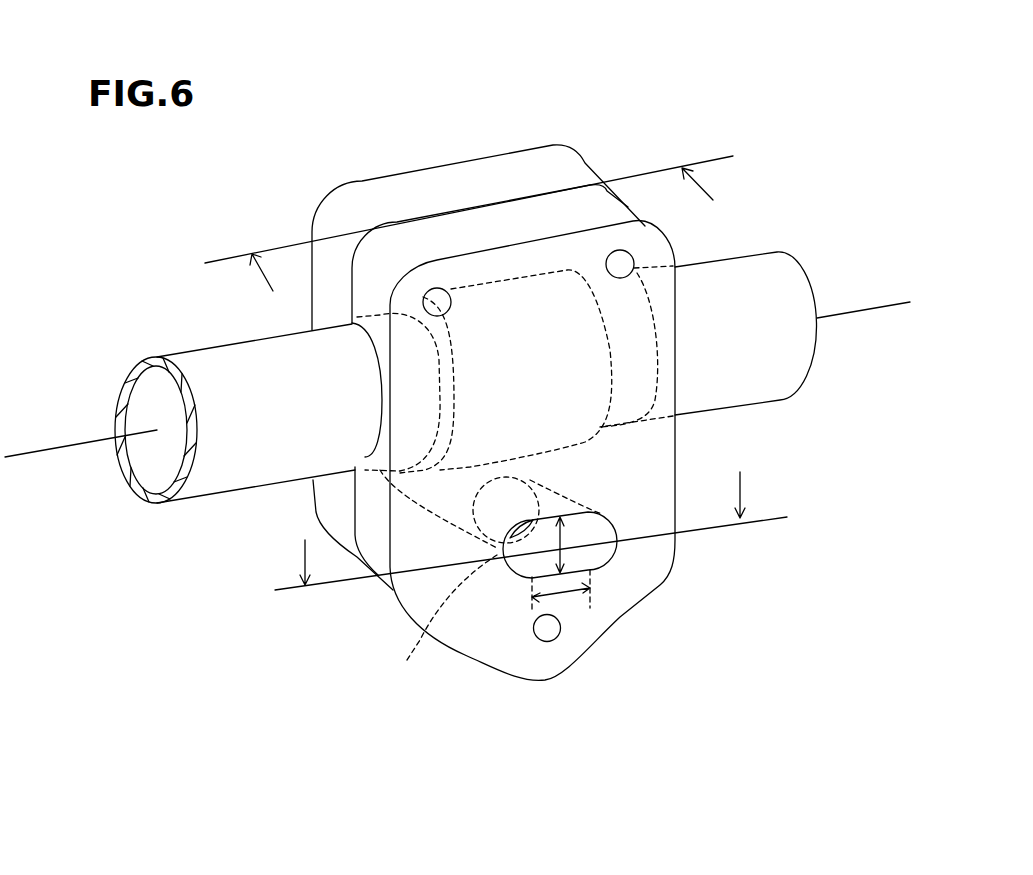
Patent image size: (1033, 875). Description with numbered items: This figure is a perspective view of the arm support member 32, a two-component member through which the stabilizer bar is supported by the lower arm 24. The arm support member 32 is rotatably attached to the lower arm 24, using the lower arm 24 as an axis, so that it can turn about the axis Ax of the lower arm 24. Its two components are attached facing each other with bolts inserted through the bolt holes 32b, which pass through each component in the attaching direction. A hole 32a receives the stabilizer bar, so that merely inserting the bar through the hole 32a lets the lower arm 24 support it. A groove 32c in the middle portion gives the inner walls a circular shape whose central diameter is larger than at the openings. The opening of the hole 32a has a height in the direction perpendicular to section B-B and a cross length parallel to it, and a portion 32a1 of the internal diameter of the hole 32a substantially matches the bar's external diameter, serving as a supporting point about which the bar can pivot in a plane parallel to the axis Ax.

The arm support member 32 is at (586, 107).
The hole 32a is at (606, 562).
The portion of the internal diameter of hole 32a1 is at (438, 629).
The bolt holes 32b is at (434, 288).
The groove 32c is at (365, 457).
The lower arm 24 is at (767, 273).
The axis Ax is at (81, 465).